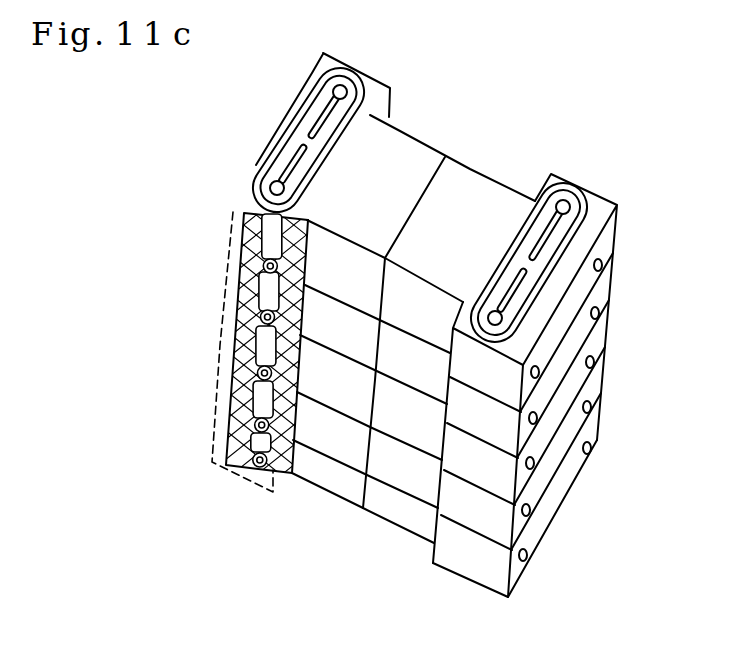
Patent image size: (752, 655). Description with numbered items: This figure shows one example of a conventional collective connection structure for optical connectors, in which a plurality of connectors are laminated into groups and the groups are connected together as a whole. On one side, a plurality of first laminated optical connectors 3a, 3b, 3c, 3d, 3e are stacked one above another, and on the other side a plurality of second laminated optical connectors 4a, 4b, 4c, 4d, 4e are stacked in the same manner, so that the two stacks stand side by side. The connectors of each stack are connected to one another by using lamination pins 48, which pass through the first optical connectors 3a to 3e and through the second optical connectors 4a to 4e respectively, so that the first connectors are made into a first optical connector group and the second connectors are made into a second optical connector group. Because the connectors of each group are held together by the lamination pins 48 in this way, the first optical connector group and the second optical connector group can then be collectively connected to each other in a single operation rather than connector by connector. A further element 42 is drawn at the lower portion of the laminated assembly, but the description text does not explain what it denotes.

The first laminated optical connector 3a is at (397, 150).
The first laminated optical connector 3b is at (230, 289).
The first laminated optical connector 3c is at (224, 343).
The first laminated optical connector 3d is at (222, 397).
The first laminated optical connector 3e is at (218, 440).
The second laminated optical connector 4a is at (490, 200).
The second laminated optical connector 4b is at (610, 300).
The second laminated optical connector 4c is at (600, 347).
The second laminated optical connector 4d is at (600, 390).
The second laminated optical connector 4e is at (593, 440).
The base plate 42 is at (393, 517).
The lamination pin 48 is at (343, 88).